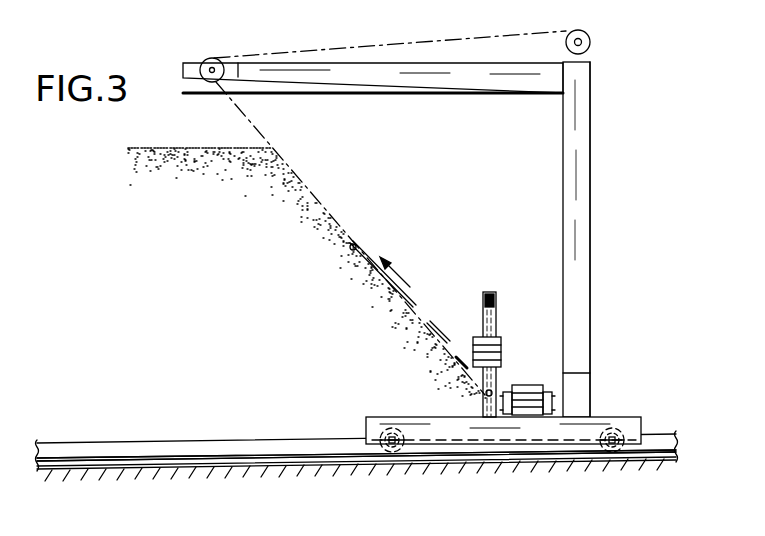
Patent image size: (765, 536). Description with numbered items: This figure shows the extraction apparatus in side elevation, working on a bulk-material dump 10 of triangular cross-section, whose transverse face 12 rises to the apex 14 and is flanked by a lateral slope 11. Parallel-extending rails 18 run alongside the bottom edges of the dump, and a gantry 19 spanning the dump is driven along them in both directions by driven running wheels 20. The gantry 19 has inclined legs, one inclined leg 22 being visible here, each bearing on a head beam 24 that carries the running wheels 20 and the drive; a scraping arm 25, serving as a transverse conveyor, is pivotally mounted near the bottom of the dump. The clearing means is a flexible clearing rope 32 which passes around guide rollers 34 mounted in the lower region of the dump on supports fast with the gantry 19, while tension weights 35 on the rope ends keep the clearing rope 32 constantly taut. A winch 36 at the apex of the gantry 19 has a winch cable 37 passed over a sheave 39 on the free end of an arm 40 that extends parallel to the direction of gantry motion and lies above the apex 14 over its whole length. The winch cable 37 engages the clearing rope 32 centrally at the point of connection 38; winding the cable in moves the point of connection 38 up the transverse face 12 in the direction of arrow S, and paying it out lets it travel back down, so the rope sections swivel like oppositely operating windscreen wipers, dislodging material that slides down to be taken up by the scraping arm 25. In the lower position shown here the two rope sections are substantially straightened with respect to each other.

The bulk-material dump 10 is at (127, 432).
The lateral slope 11 is at (219, 316).
The transverse face 12 is at (318, 220).
The apex 14 is at (170, 147).
The rails 18 is at (240, 464).
The gantry 19 is at (591, 240).
The driven running wheels 20 is at (392, 453).
The inclined leg 22 is at (584, 160).
The head beam 24 is at (548, 430).
The scraping arm 25 is at (544, 386).
The clearing rope 32 is at (430, 327).
The guide rollers 34 is at (487, 292).
The tension weights 35 is at (501, 352).
The winch 36 is at (591, 42).
The winch cable 37 is at (362, 44).
The point of connection 38 is at (357, 245).
The sheave 39 is at (212, 58).
The arm 40 is at (460, 89).
The arrow S is at (398, 268).